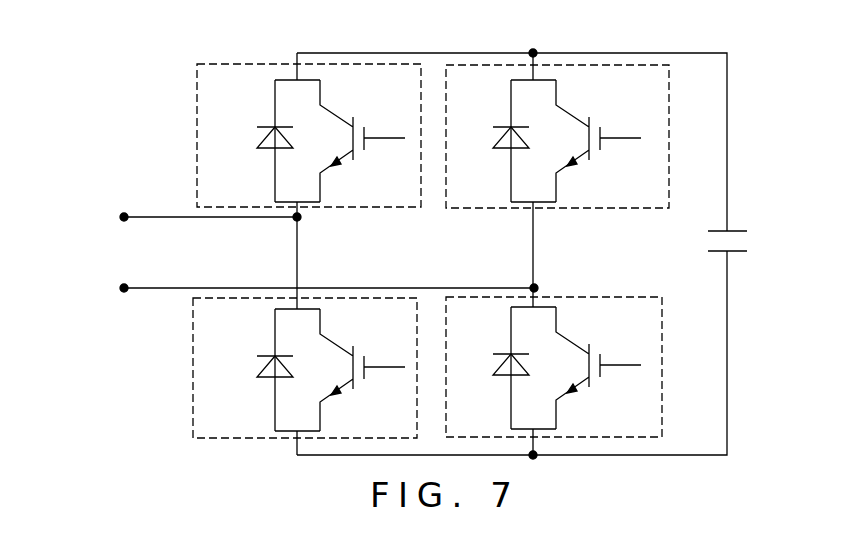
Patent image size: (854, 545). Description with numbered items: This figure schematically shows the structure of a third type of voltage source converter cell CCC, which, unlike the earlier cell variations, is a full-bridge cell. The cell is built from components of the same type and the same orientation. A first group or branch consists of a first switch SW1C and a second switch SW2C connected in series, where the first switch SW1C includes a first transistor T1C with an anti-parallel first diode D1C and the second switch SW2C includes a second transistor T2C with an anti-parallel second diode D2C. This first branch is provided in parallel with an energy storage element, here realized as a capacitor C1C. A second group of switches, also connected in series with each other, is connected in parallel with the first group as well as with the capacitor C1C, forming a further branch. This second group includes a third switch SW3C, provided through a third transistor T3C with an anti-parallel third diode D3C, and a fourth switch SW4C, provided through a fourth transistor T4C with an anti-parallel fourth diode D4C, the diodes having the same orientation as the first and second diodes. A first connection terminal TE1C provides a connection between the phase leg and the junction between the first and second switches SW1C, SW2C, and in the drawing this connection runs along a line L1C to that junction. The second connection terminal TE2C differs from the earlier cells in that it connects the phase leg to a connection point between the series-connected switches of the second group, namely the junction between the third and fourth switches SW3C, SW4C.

The converter cell CCC is at (160, 61).
The first switch SW1C is at (380, 207).
The second switch SW2C is at (243, 437).
The third switch SW3C is at (503, 208).
The fourth switch SW4C is at (583, 297).
The first diode D1C is at (252, 141).
The second diode D2C is at (254, 370).
The third diode D3C is at (490, 141).
The fourth diode D4C is at (491, 368).
The first transistor T1C is at (366, 141).
The second transistor T2C is at (366, 370).
The third transistor T3C is at (607, 141).
The fourth transistor T4C is at (607, 368).
The capacitor C1C is at (759, 240).
The first connection terminal TE1C is at (79, 206).
The second connection terminal TE2C is at (282, 290).
The connection line L1C is at (210, 234).